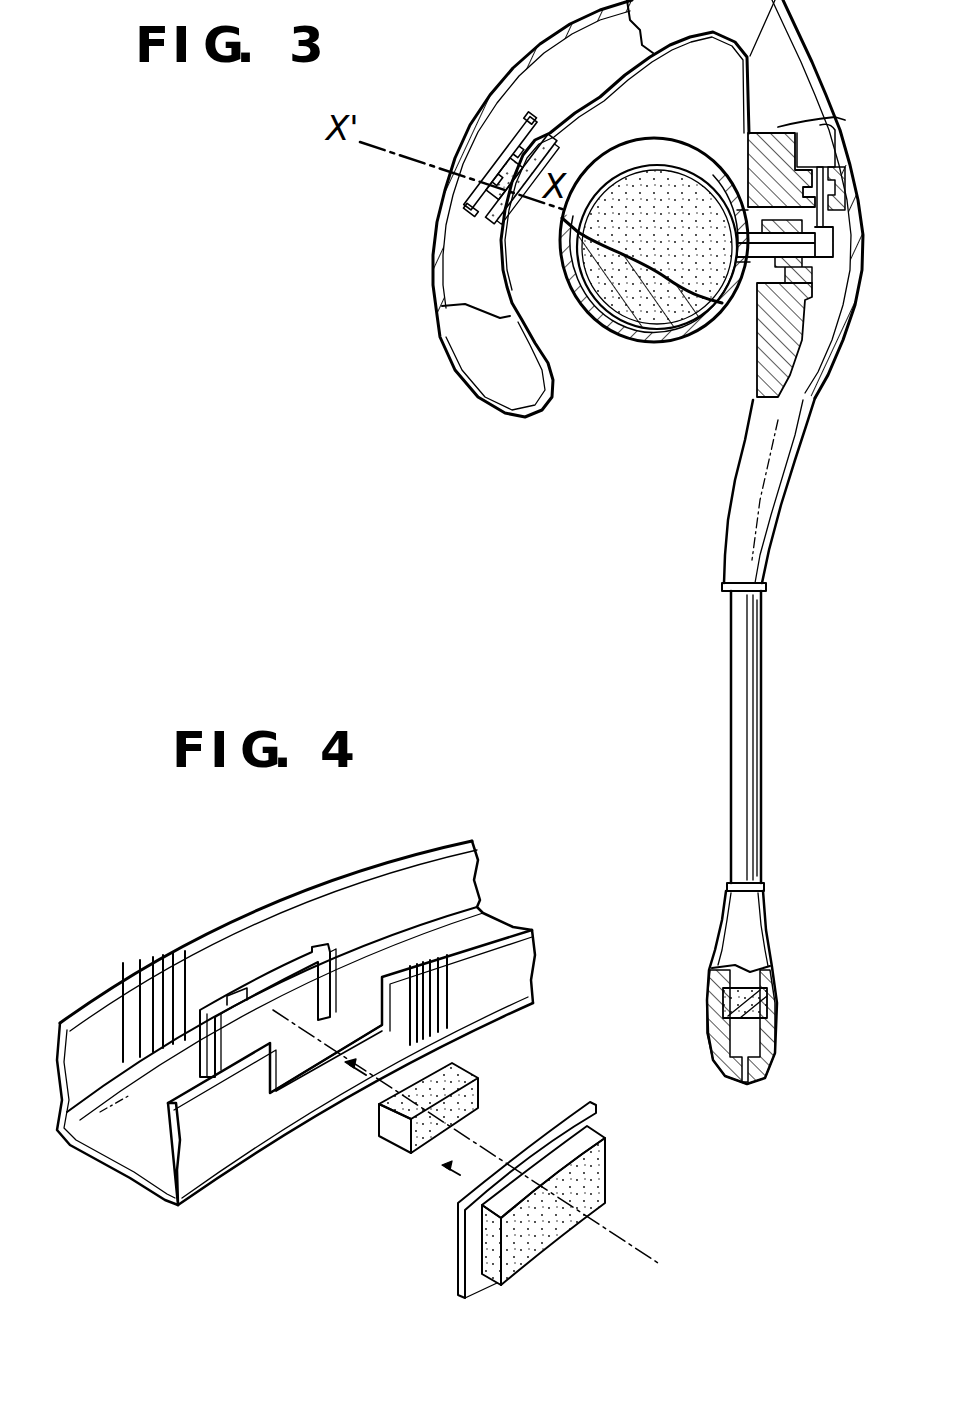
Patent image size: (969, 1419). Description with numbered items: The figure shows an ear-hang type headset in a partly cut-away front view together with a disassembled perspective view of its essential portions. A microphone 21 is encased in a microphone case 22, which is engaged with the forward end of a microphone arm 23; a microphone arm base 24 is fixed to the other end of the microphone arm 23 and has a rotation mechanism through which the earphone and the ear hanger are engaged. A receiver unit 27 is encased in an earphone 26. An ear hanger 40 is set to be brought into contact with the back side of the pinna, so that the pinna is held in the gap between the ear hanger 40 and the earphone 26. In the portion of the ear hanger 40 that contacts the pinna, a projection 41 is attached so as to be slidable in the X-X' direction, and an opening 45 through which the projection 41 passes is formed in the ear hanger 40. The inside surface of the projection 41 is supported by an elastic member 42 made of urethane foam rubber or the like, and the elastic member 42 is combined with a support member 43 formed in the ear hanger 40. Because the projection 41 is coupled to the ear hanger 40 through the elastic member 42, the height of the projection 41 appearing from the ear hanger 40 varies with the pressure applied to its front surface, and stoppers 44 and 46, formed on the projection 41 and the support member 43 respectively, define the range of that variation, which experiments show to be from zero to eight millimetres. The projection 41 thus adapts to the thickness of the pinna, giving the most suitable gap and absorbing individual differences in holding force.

In FIG. 3, the microphone 21 is at (770, 1008).
In FIG. 3, the microphone case 22 is at (764, 918).
In FIG. 3, the microphone arm 23 is at (752, 750).
In FIG. 3, the microphone arm base 24 is at (778, 453).
In FIG. 3, the earphone 26 is at (681, 178).
In FIG. 3, the receiver unit 27 is at (626, 338).
In FIG. 3, the ear hanger 40 is at (780, 30).
In FIG. 4, the ear hanger 40 is at (418, 851).
In FIG. 3, the projection 41 is at (572, 141).
In FIG. 4, the projection 41 is at (545, 1240).
In FIG. 3, the elastic member 42 is at (496, 224).
In FIG. 4, the elastic member 42 is at (480, 1070).
In FIG. 3, the support member 43 is at (503, 181).
In FIG. 4, the support member 43 is at (282, 953).
In FIG. 4, the stopper 44 is at (456, 1262).
In FIG. 4, the opening 45 is at (275, 1090).
In FIG. 4, the stopper 46 is at (244, 1000).